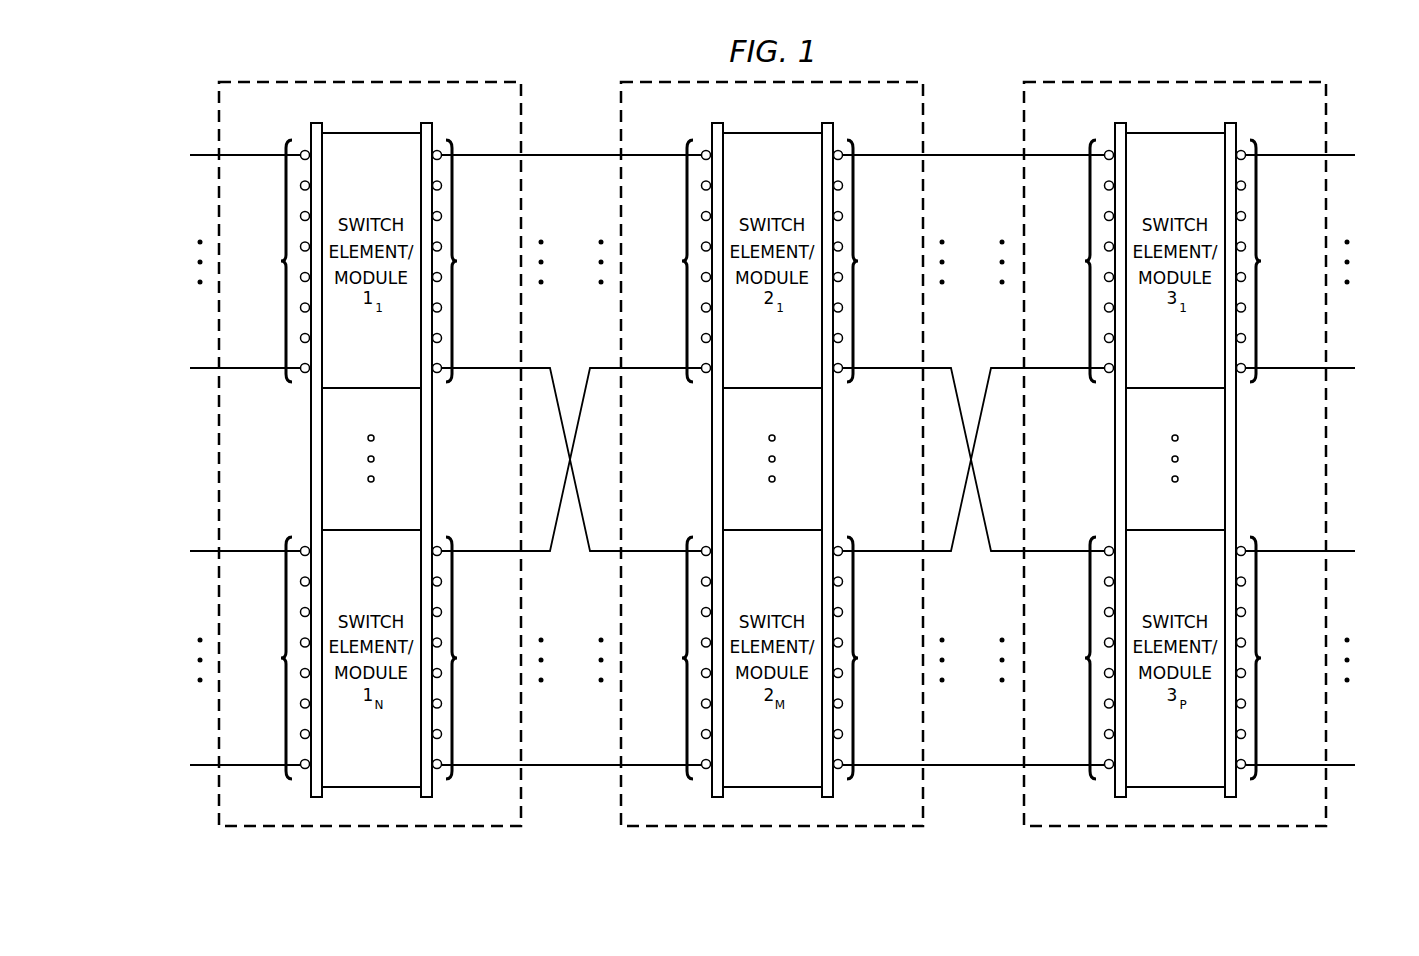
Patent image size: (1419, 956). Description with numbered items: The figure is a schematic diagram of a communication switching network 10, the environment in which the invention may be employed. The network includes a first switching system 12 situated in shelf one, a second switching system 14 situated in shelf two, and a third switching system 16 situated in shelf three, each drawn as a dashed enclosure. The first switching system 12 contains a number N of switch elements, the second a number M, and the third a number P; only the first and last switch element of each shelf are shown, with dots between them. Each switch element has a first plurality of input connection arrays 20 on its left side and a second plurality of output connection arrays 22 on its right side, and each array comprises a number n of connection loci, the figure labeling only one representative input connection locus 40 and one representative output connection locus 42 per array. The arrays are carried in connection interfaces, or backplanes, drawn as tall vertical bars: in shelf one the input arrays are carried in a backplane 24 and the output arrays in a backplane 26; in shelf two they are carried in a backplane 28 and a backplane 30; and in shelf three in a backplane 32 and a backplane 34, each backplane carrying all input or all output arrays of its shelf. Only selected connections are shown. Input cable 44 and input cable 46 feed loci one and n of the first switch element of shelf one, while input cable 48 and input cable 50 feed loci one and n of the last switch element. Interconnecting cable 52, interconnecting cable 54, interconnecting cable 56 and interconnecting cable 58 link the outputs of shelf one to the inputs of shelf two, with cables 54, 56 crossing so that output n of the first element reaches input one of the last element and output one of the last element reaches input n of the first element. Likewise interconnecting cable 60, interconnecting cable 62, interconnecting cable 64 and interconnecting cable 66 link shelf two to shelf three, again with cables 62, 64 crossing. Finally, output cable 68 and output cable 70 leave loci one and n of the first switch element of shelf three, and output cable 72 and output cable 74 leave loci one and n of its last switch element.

The communication switching network 10 is at (574, 74).
The first switching system 12 is at (314, 80).
The second switching system 14 is at (680, 80).
The third switching system 16 is at (1235, 80).
The input connection array 20 is at (1009, 613).
The output connection array 22 is at (534, 294).
The backplane 24 is at (311, 456).
The backplane 26 is at (432, 452).
The backplane 28 is at (712, 456).
The backplane 30 is at (833, 452).
The backplane 32 is at (1115, 456).
The backplane 34 is at (1236, 452).
The input connection locus 40 is at (670, 459).
The output connection locus 42 is at (870, 459).
The input cable 44 is at (256, 153).
The input cable 46 is at (256, 370).
The input cable 48 is at (256, 550).
The input cable 50 is at (250, 767).
The interconnecting cable 52 is at (491, 153).
The interconnecting cable 54 is at (488, 370).
The interconnecting cable 56 is at (488, 550).
The interconnecting cable 58 is at (487, 767).
The interconnecting cable 60 is at (1050, 153).
The interconnecting cable 62 is at (887, 370).
The interconnecting cable 64 is at (888, 550).
The interconnecting cable 66 is at (1052, 767).
The output cable 68 is at (1292, 153).
The output cable 70 is at (1290, 370).
The output cable 72 is at (1290, 550).
The output cable 74 is at (1294, 767).